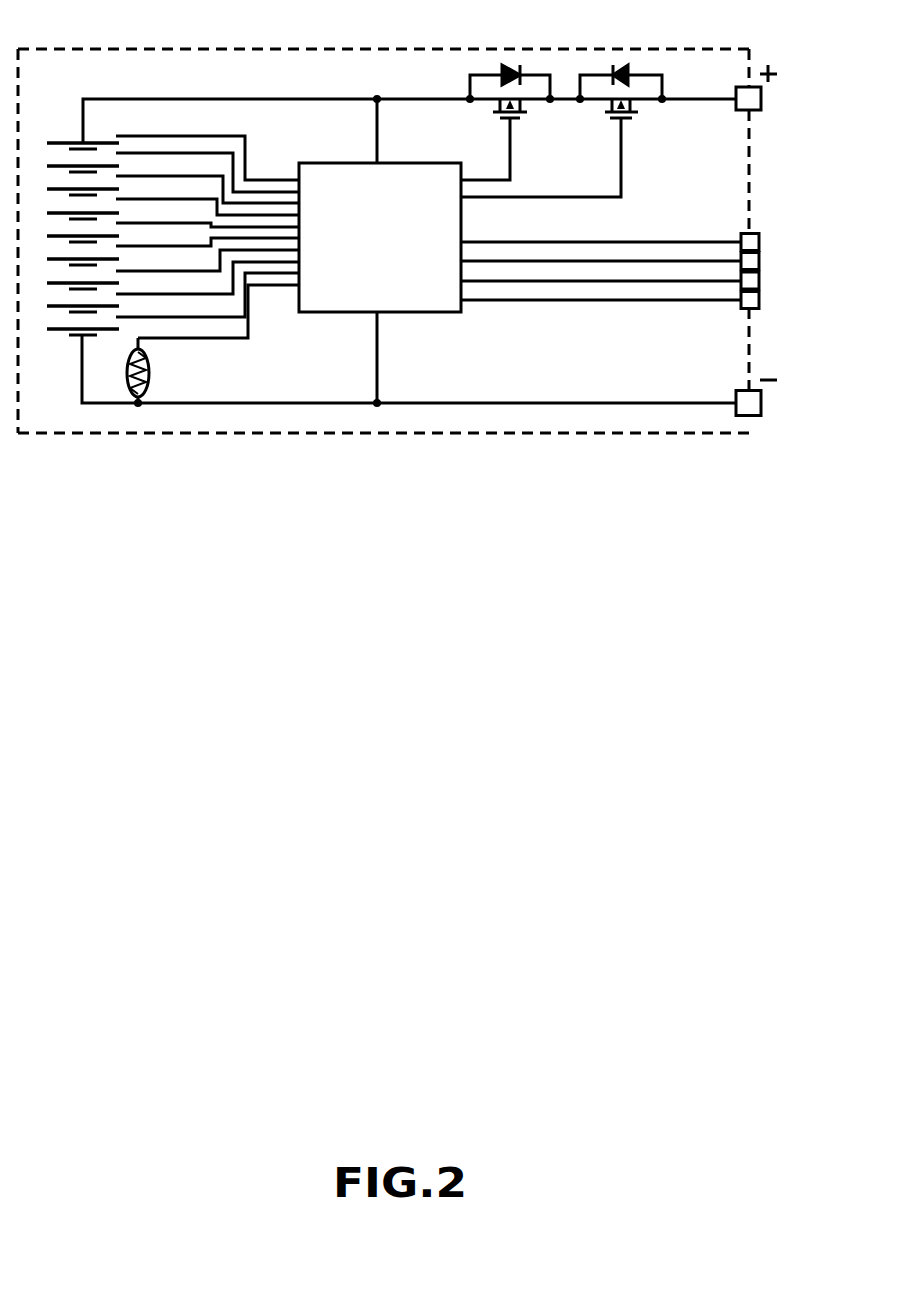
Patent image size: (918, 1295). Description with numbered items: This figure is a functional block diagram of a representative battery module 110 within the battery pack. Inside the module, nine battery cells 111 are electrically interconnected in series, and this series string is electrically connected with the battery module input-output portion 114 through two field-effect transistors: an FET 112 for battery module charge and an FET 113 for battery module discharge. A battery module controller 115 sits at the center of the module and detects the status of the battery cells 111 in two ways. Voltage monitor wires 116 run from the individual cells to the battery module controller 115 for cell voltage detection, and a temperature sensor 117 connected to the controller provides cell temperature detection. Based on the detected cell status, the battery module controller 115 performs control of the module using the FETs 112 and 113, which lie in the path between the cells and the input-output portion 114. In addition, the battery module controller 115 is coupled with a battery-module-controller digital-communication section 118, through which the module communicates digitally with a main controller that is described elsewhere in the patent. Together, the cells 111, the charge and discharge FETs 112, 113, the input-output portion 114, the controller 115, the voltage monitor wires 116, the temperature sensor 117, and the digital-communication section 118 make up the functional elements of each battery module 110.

The battery module 110 is at (677, 46).
The battery cells 111 is at (75, 225).
The FET for battery module charge 112 is at (485, 122).
The FET for battery module discharge 113 is at (586, 131).
The battery module input-output portion 114 is at (764, 254).
The battery module controller 115 is at (380, 237).
The voltage monitor wires 116 is at (209, 212).
The temperature sensor 117 is at (213, 344).
The battery-module-controller digital-communication section 118 is at (610, 291).